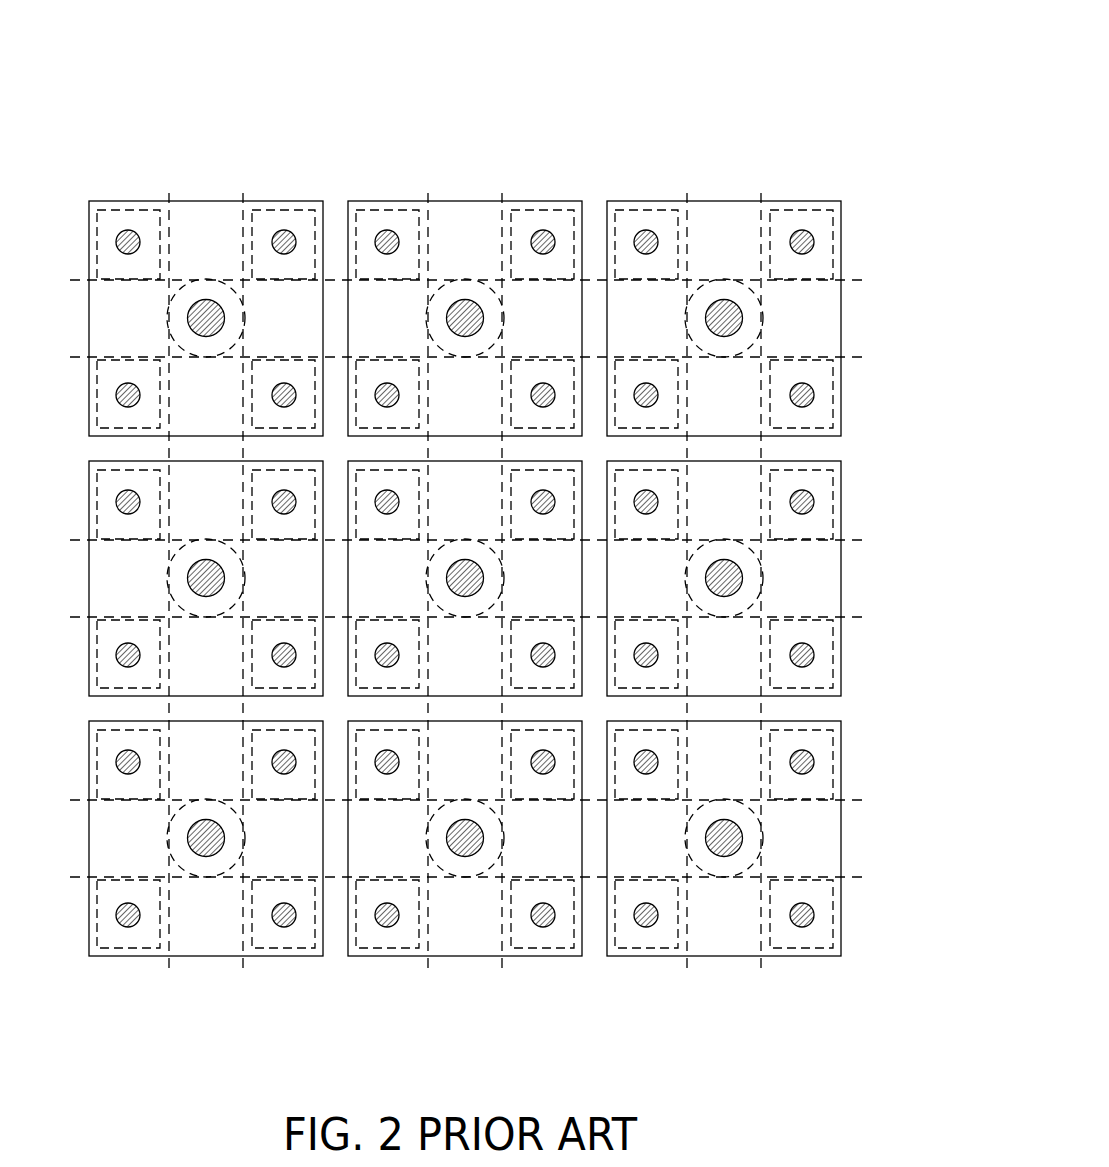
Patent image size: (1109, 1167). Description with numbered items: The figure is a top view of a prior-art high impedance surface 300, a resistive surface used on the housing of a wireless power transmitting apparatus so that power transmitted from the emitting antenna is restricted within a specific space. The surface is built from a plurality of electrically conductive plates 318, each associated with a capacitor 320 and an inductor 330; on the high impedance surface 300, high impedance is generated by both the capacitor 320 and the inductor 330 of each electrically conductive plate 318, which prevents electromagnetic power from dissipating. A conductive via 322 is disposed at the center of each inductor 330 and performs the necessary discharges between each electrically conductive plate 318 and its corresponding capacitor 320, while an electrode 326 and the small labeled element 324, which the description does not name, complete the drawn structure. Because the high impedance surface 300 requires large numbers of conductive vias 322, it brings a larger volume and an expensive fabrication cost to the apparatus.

The high impedance surface 300 is at (770, 80).
The electrically conductive plate 318 is at (722, 202).
The capacitor 320 is at (315, 207).
The conductive via 322 is at (285, 228).
The small photodiode element 324 is at (548, 210).
The electrode 326 is at (502, 228).
The inductor 330 is at (150, 327).